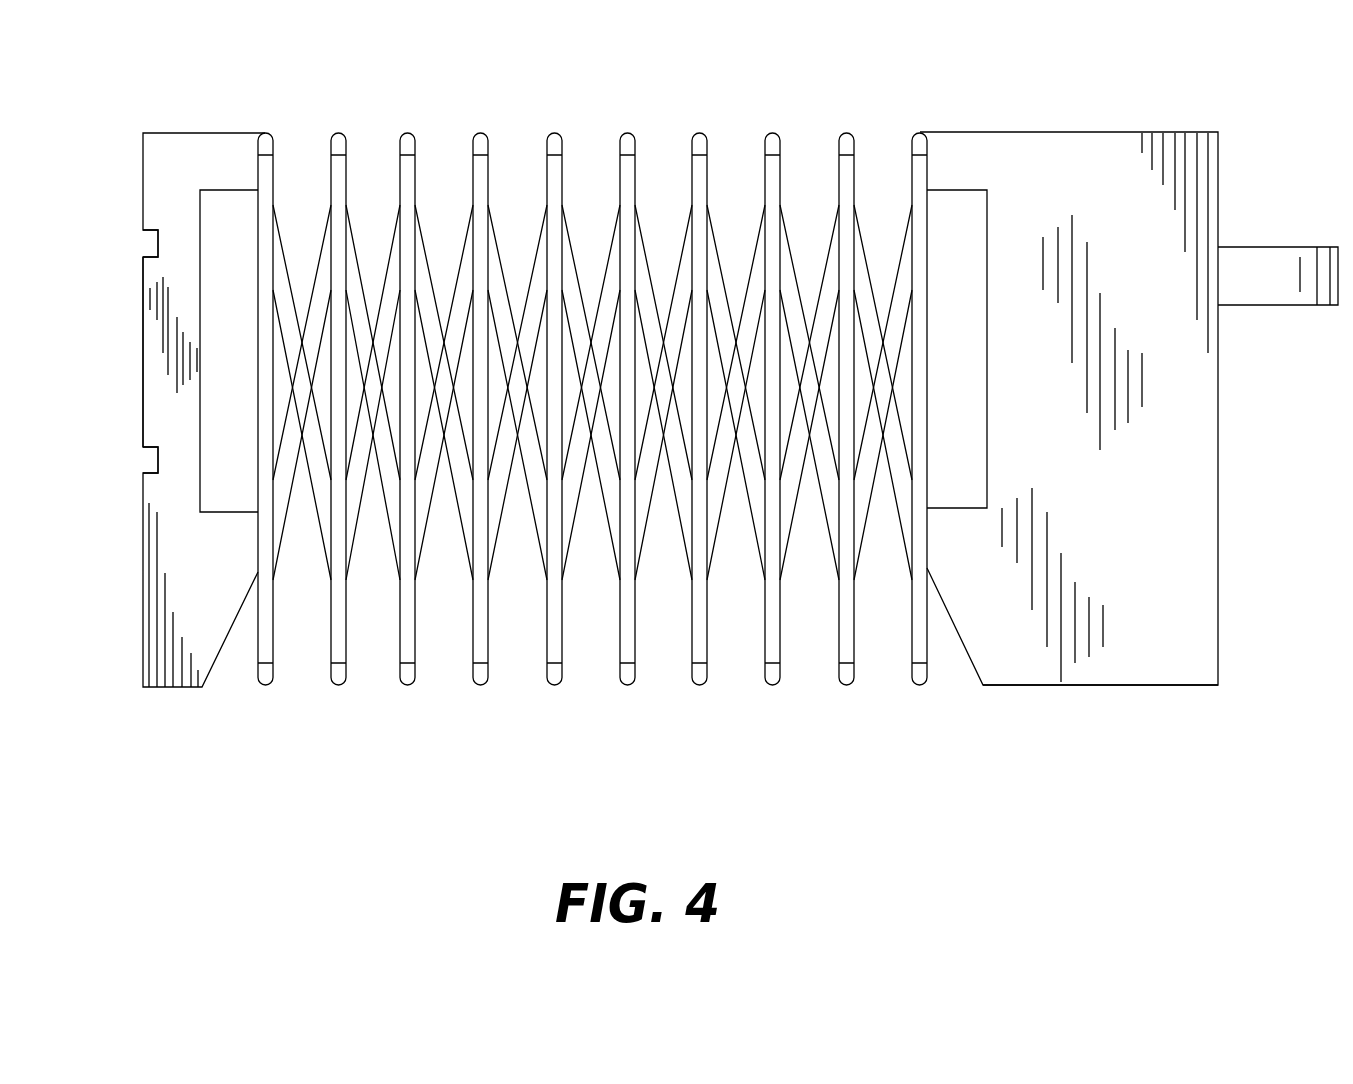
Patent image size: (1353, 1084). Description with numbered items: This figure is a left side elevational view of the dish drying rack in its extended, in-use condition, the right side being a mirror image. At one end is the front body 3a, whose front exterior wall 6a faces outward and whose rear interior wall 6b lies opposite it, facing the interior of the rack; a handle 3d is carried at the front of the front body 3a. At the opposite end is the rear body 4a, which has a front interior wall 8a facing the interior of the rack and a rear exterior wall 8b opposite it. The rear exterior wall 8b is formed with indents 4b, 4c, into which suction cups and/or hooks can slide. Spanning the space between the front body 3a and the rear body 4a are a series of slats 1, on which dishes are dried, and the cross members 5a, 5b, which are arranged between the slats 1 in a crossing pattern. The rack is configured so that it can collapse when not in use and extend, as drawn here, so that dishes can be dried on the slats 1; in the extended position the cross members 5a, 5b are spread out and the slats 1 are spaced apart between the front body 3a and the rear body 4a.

The slats 1 is at (402, 135).
The front body 3a is at (1198, 650).
The handle 3d is at (1260, 250).
The rear body 4a is at (202, 145).
The indent 4b is at (150, 240).
The indent 4c is at (152, 467).
The cross member 5a is at (593, 370).
The cross member 5b is at (592, 330).
The front exterior wall 6a is at (1218, 447).
The rear interior wall 6b is at (985, 410).
The front interior wall 8a is at (198, 388).
The rear exterior wall 8b is at (142, 365).